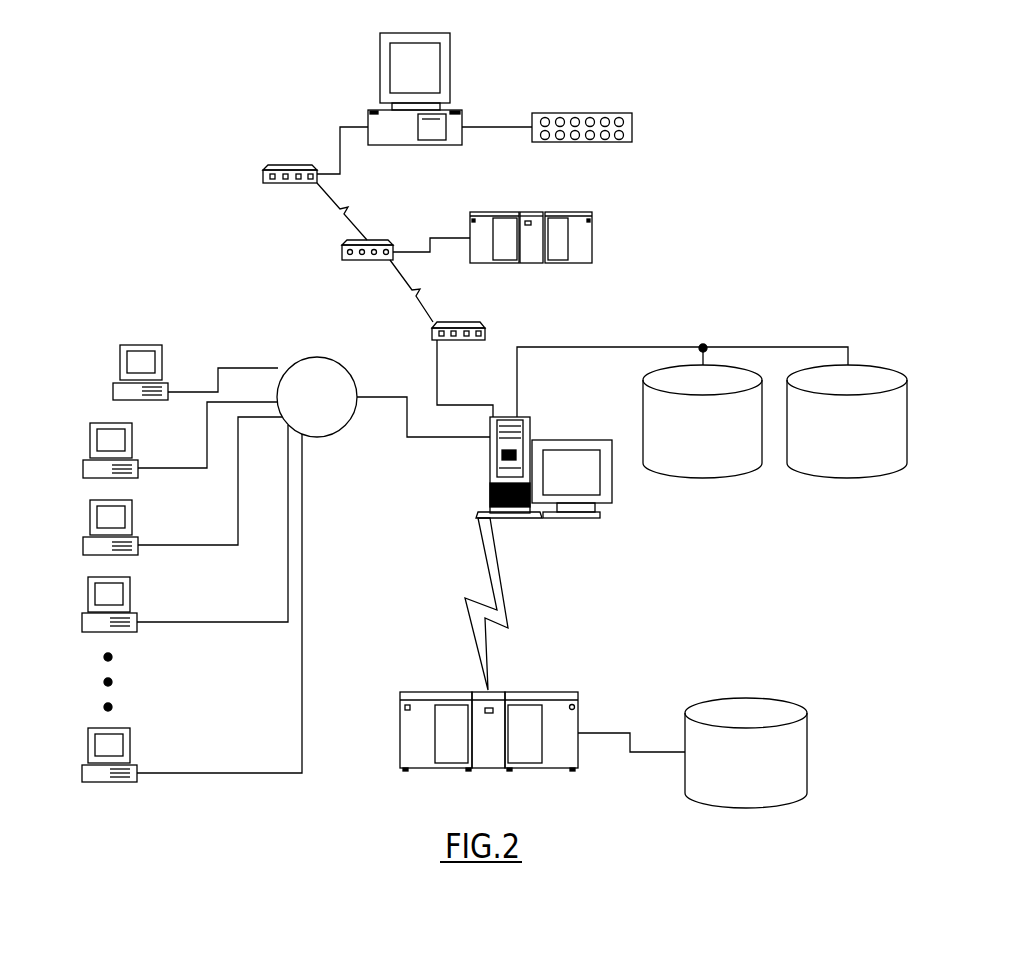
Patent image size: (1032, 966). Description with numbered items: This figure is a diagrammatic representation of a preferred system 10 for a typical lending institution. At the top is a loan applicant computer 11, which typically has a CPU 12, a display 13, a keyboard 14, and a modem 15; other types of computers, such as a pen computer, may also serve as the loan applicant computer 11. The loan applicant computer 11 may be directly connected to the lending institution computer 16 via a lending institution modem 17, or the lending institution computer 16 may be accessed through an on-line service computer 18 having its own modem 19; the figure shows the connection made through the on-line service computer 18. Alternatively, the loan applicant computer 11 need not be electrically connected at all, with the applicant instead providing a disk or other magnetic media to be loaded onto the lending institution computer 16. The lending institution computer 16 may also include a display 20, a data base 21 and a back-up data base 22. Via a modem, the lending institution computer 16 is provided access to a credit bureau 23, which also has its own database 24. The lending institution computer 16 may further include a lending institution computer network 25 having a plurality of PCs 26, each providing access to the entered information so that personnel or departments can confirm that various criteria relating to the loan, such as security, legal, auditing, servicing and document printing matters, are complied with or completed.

The system 10 is at (185, 244).
The loan applicant computer 11 is at (478, 69).
The CPU 12 is at (450, 145).
The display 13 is at (422, 33).
The keyboard 14 is at (632, 128).
The modem 15 is at (280, 183).
The lending institution computer 16 is at (508, 518).
The lending institution modem 17 is at (485, 333).
The on-line service computer 18 is at (592, 235).
The modem 19 is at (358, 262).
The display 20 is at (613, 482).
The data base 21 is at (702, 478).
The back-up data base 22 is at (843, 478).
The credit bureau 23 is at (537, 768).
The database 24 is at (745, 808).
The lending institution computer network 25 is at (330, 408).
The PCs 26 is at (120, 360).